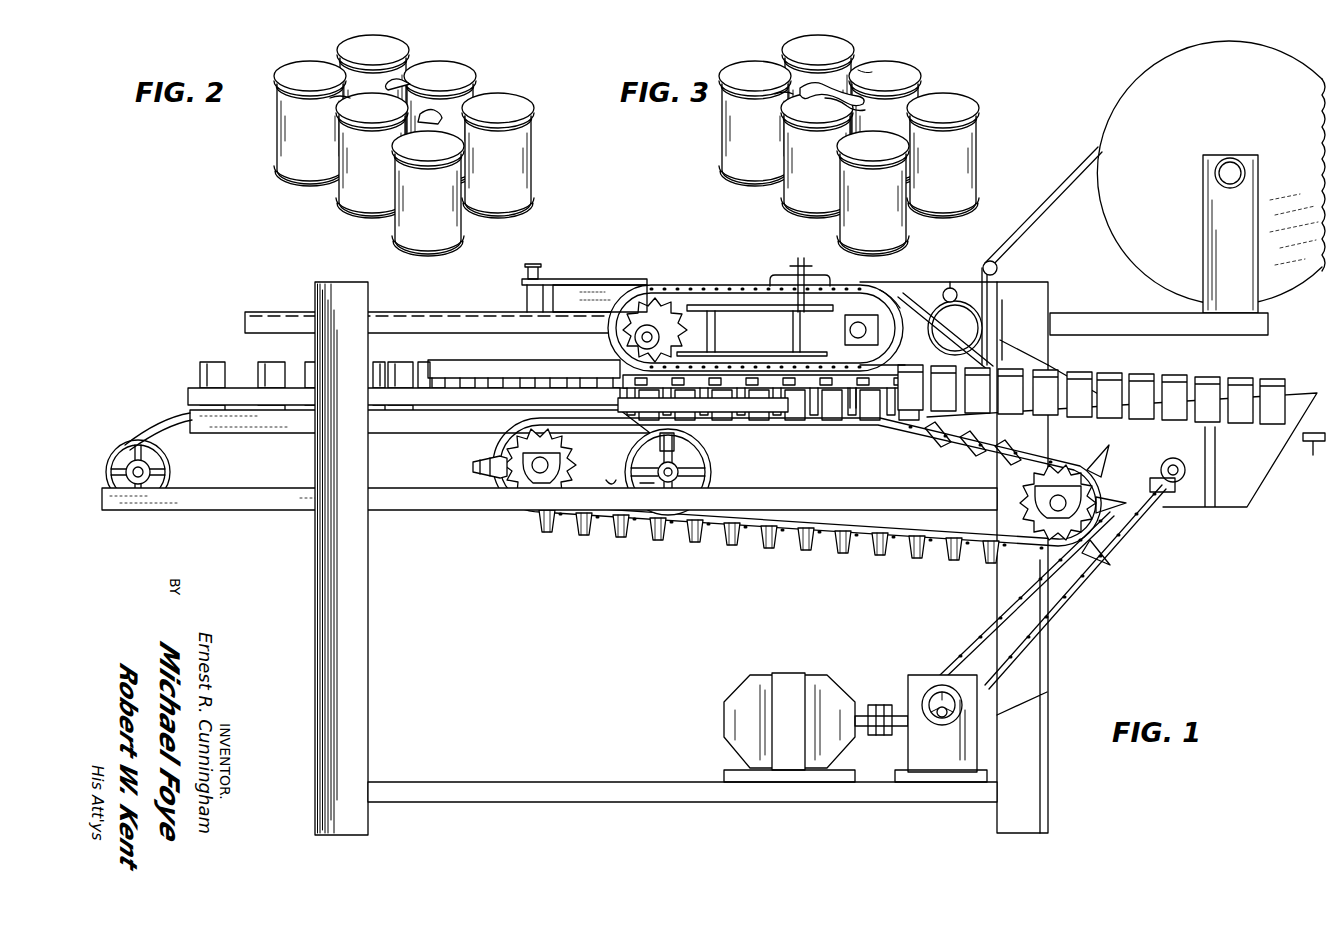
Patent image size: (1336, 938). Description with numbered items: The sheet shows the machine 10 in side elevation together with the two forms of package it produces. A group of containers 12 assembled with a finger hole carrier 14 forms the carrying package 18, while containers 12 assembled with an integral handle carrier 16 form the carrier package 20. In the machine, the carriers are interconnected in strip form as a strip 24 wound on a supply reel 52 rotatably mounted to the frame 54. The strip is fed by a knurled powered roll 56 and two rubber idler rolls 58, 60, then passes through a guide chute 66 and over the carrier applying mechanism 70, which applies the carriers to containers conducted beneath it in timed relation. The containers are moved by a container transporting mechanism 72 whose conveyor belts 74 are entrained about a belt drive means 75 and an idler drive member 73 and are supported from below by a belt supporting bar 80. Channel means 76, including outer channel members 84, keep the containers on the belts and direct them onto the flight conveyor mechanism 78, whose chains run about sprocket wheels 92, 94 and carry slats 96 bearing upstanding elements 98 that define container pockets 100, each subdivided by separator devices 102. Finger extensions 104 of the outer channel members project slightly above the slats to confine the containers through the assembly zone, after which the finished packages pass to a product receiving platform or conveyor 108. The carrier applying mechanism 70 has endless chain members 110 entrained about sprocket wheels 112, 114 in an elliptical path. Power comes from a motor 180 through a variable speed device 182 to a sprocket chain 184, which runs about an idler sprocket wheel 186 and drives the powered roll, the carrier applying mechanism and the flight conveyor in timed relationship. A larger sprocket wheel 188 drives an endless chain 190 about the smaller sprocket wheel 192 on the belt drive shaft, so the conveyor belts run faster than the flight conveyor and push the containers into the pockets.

In FIG. 1, the machine 10 is at (1095, 686).
In FIG. 2, the containers 12 is at (405, 238).
In FIG. 3, the containers 12 is at (848, 240).
In FIG. 1, the containers 12 is at (267, 370).
In FIG. 2, the container carrier 14 is at (332, 97).
In FIG. 3, the container carrier 16 is at (775, 99).
In FIG. 2, the carrying package 18 is at (490, 87).
In FIG. 3, the carrier package 20 is at (932, 86).
In FIG. 1, the carrier strip 24 is at (1040, 206).
In FIG. 1, the supply reel 52 is at (1135, 100).
In FIG. 1, the frame 54 is at (1217, 323).
In FIG. 1, the knurled powered roll 56 is at (968, 337).
In FIG. 1, the rubber idler roll 58 is at (950, 289).
In FIG. 1, the rubber idler roll 60 is at (996, 268).
In FIG. 1, the guide chute 66 is at (813, 282).
In FIG. 1, the carrier applying mechanism 70 is at (715, 282).
In FIG. 1, the container transporting mechanism 72 is at (533, 534).
In FIG. 1, the idler drive member 73 is at (170, 468).
In FIG. 1, the conveyor belts 74 is at (155, 434).
In FIG. 1, the belt drive means 75 is at (692, 478).
In FIG. 1, the channel means 76 is at (612, 480).
In FIG. 1, the flight conveyor mechanism 78 is at (785, 544).
In FIG. 1, the belt supporting bar 80 is at (264, 425).
In FIG. 1, the outer channel members 84 is at (458, 372).
In FIG. 1, the sprocket wheels 92 is at (490, 477).
In FIG. 1, the sprocket wheels 94 is at (1023, 486).
In FIG. 1, the slats 96 is at (812, 408).
In FIG. 1, the upstanding elements 98 is at (847, 410).
In FIG. 1, the container pockets 100 is at (715, 535).
In FIG. 1, the separator devices 102 is at (850, 388).
In FIG. 1, the finger extensions 104 is at (755, 403).
In FIG. 1, the product receiving platform or conveyor 108 is at (1313, 442).
In FIG. 1, the endless chain members 110 is at (616, 298).
In FIG. 1, the sprocket wheels 112 is at (620, 343).
In FIG. 1, the sprocket wheels 114 is at (863, 302).
In FIG. 1, the motor 180 is at (755, 685).
In FIG. 1, the variable speed device 182 is at (920, 676).
In FIG. 1, the sprocket chain 184 is at (1074, 604).
In FIG. 1, the idler sprocket wheel 186 is at (1161, 483).
In FIG. 1, the sprocket wheel 188 is at (583, 463).
In FIG. 1, the endless chain 190 is at (703, 456).
In FIG. 1, the sprocket wheel 192 is at (649, 485).